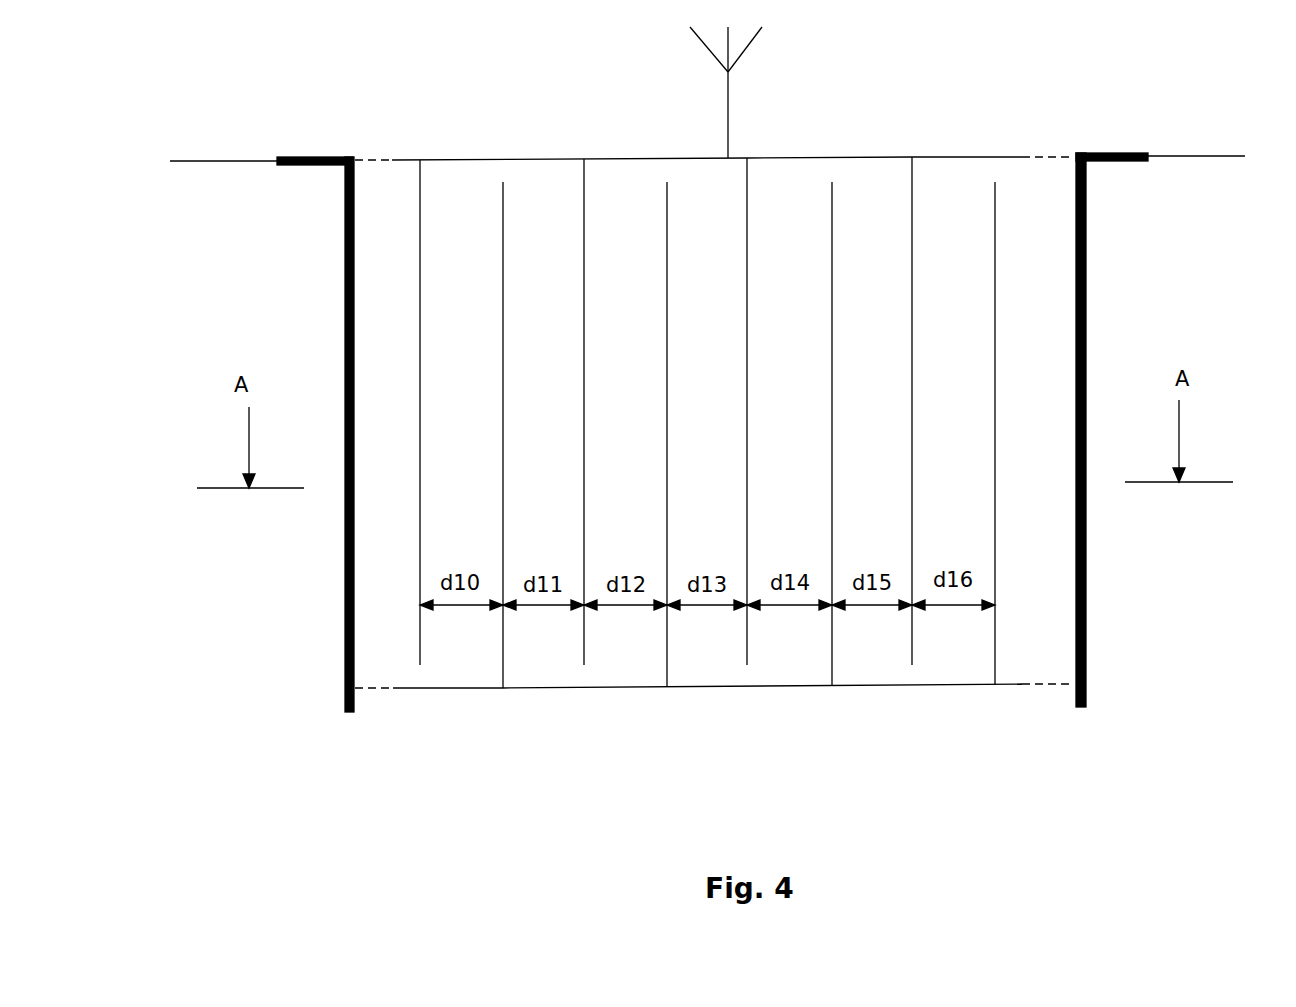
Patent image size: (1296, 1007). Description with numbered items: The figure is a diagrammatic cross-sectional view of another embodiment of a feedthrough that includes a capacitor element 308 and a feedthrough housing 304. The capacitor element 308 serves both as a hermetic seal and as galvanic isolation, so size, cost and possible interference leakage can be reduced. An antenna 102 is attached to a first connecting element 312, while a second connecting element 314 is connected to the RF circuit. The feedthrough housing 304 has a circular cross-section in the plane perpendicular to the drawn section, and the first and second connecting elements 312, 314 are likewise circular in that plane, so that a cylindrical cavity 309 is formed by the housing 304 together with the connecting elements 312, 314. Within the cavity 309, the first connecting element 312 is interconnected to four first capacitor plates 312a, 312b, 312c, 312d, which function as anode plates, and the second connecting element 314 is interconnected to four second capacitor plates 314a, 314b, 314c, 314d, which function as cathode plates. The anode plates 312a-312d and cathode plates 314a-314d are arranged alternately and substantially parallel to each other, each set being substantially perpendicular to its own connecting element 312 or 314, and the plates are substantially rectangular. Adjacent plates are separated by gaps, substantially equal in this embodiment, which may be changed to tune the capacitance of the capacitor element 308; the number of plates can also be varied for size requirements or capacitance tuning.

The antenna 102 is at (730, 78).
The feedthrough housing 304 is at (1084, 295).
The capacitor element 308 is at (520, 147).
The cavity 309 is at (473, 672).
The first connecting element 312 is at (868, 153).
The first capacitor plate 312a is at (418, 233).
The first capacitor plate 312b is at (582, 365).
The first capacitor plate 312c is at (746, 345).
The first capacitor plate 312d is at (912, 362).
The second connecting element 314 is at (864, 686).
The second capacitor plate 314a is at (501, 330).
The second capacitor plate 314b is at (666, 322).
The second capacitor plate 314c is at (830, 370).
The second capacitor plate 314d is at (994, 362).